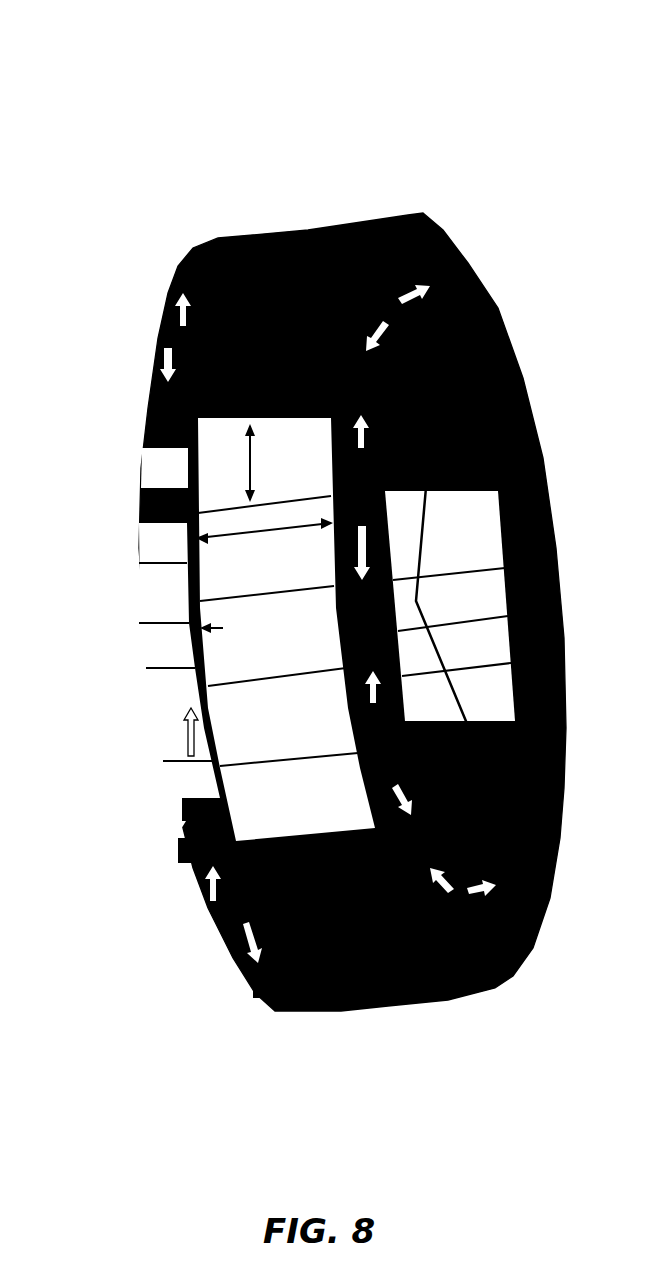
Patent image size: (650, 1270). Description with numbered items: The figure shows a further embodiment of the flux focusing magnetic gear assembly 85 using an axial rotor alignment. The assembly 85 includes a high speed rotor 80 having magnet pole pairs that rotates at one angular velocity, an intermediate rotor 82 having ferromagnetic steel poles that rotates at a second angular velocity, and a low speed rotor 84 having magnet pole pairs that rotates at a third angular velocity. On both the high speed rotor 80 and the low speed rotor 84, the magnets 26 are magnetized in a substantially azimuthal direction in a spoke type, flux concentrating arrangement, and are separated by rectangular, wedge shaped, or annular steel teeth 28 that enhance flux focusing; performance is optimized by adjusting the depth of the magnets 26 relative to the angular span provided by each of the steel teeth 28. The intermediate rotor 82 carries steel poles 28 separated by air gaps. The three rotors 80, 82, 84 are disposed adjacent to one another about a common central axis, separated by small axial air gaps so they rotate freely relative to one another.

The magnets 26 is at (195, 345).
The steel teeth 28 is at (277, 223).
The high speed rotor 80 is at (520, 380).
The intermediate rotor 82 is at (247, 980).
The low speed rotor 84 is at (183, 847).
The flux focusing magnetic gear assembly 85 is at (541, 108).